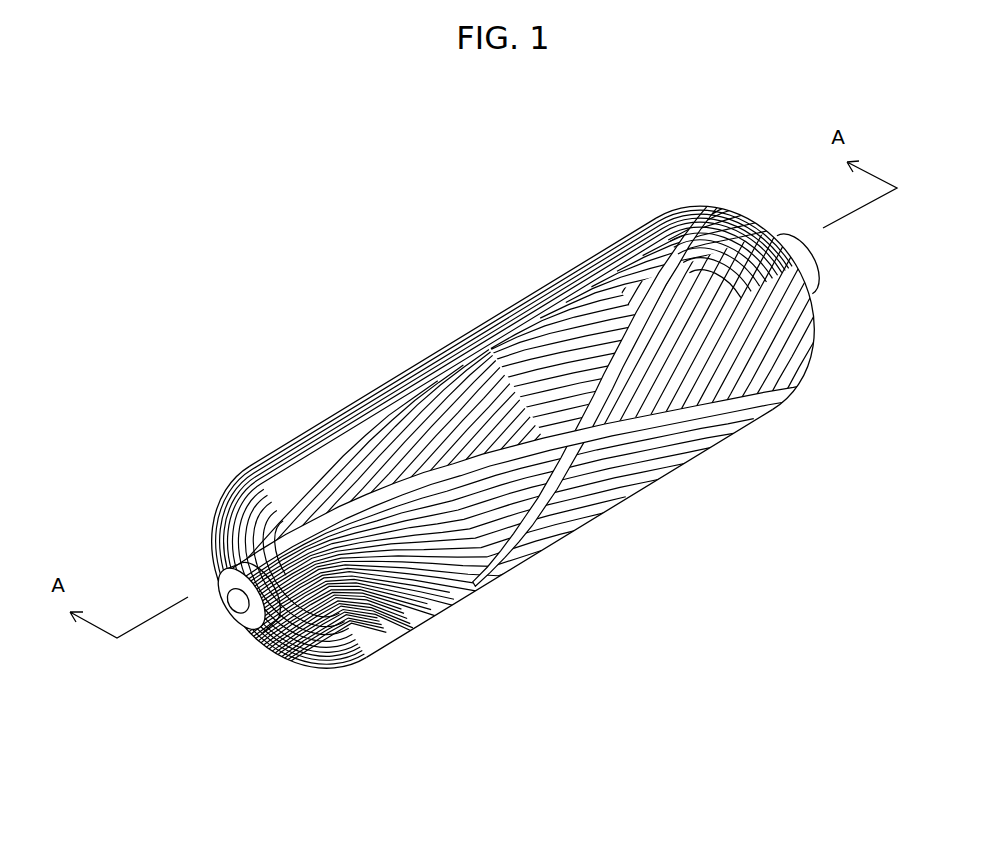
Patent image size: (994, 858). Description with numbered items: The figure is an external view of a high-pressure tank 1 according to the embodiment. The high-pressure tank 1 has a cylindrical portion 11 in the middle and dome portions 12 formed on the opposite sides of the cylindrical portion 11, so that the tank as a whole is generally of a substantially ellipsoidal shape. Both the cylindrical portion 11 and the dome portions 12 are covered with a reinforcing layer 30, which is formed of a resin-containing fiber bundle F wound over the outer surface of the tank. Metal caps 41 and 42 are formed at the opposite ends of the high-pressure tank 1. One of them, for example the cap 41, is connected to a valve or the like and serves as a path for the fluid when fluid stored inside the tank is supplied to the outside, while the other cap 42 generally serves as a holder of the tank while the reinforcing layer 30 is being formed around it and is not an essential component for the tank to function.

The high-pressure tank 1 is at (595, 189).
The cylindrical portion 11 is at (597, 490).
The dome portions 12 is at (806, 350).
The reinforcing layer 30 is at (483, 567).
The fiber bundle F is at (523, 325).
The cap 41 is at (245, 617).
The cap 42 is at (818, 266).